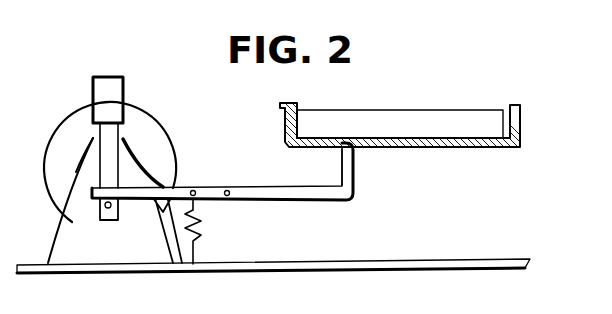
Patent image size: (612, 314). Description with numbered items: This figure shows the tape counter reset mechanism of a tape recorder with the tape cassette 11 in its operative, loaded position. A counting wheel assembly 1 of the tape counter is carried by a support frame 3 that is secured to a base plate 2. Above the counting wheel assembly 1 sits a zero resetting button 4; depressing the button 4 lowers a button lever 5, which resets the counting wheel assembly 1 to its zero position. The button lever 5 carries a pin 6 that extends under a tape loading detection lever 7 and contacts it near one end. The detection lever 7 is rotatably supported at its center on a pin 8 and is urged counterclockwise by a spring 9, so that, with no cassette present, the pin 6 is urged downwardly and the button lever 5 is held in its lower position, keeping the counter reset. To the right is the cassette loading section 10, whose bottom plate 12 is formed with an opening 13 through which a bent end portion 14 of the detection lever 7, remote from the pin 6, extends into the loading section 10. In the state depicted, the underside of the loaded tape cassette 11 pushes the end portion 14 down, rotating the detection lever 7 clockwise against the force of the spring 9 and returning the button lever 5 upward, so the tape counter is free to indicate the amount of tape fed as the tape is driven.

The counting wheel assembly 1 is at (155, 138).
The base plate 2 is at (459, 241).
The support frame 3 is at (66, 228).
The zero resetting button 4 is at (110, 101).
The button lever 5 is at (100, 138).
The pin 6 is at (108, 220).
The tape loading detection lever 7 is at (274, 200).
The pin 8 is at (226, 190).
The spring 9 is at (197, 240).
The cassette loading section 10 is at (518, 123).
The tape cassette 11 is at (423, 112).
The bottom plate 12 is at (471, 141).
The opening 13 is at (336, 149).
The bent end portion 14 is at (350, 160).